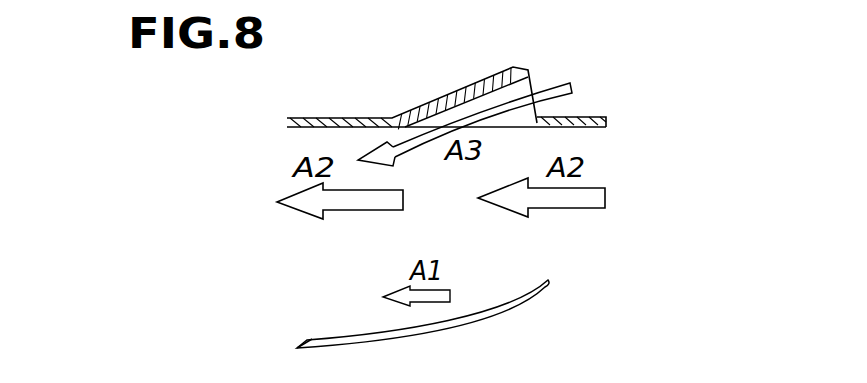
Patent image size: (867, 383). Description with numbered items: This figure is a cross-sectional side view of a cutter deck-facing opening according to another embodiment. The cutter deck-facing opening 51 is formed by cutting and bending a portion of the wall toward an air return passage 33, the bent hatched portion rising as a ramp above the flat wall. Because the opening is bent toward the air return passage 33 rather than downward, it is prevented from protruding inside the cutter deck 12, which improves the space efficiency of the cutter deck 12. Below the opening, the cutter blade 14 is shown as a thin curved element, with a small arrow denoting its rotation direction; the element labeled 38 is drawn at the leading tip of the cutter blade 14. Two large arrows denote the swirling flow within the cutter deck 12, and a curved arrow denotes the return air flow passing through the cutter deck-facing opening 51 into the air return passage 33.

The cutter deck-facing opening 51 is at (530, 82).
The air return passage 33 is at (610, 98).
The cutter deck 12 is at (540, 235).
The cutter blade 14 is at (507, 316).
The blade leading edge 38 is at (303, 342).